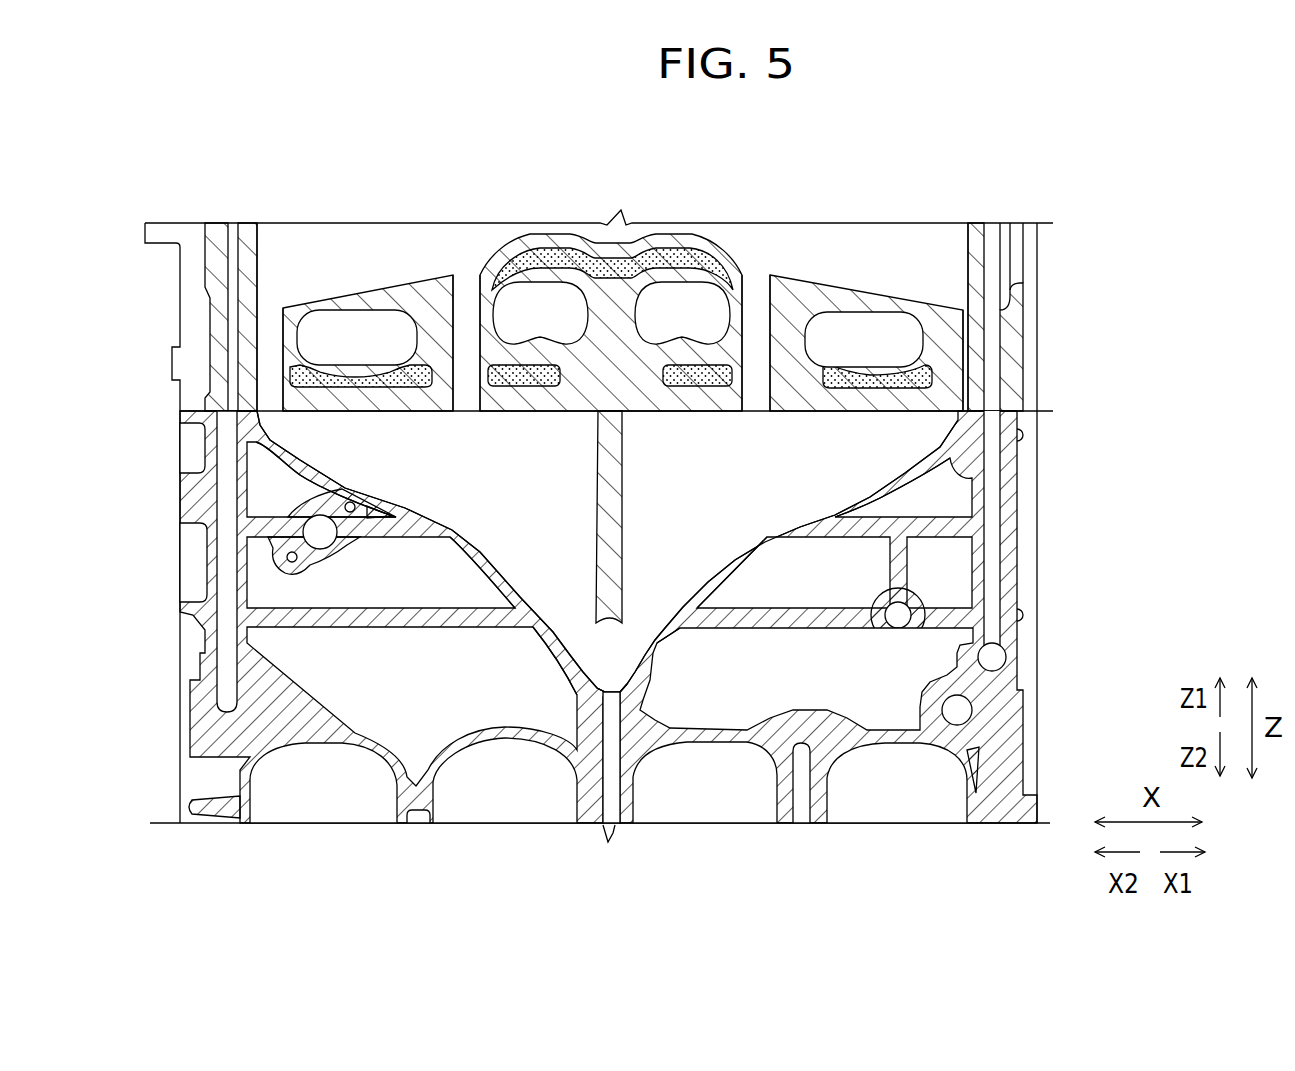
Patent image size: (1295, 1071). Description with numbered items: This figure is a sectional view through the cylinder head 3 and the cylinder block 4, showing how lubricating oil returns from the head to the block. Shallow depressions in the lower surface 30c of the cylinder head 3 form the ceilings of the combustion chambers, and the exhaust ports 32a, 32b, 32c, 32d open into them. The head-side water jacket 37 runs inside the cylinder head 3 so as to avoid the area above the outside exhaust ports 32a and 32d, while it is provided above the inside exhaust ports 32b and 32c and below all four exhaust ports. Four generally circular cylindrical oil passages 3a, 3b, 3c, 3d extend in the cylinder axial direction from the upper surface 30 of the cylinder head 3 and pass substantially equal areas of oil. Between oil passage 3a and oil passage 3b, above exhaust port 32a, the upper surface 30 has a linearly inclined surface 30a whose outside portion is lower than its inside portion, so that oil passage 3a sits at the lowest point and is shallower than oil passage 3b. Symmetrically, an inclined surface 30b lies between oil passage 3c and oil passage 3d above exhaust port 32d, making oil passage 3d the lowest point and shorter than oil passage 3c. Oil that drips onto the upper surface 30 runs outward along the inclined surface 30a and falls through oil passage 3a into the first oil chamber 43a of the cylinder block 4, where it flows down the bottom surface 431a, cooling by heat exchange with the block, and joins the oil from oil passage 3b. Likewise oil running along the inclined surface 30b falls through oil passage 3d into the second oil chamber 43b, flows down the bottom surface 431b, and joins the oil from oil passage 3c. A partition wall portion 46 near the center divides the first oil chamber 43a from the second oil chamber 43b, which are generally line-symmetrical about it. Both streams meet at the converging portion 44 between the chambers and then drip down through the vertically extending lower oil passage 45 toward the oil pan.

The cylinder head 3 is at (1013, 270).
The oil passage 3a is at (960, 328).
The oil passage 3b is at (745, 310).
The oil passage 3c is at (470, 292).
The oil passage 3d is at (262, 322).
The cylinder block 4 is at (1015, 557).
The upper surface 30 is at (616, 310).
The inclined surface 30a is at (860, 290).
The inclined surface 30b is at (371, 290).
The lower surface 30c is at (670, 413).
The exhaust port 32a is at (820, 350).
The exhaust port 32b is at (678, 300).
The exhaust port 32c is at (547, 305).
The exhaust port 32d is at (296, 338).
The head-side water jacket 37 is at (603, 268).
The first oil chamber 43a is at (710, 517).
The second oil chamber 43b is at (500, 513).
The bottom surface 431a is at (767, 540).
The bottom surface 431b is at (540, 637).
The converging portion 44 is at (630, 665).
The lower oil passage 45 is at (603, 823).
The partition wall portion 46 is at (600, 458).